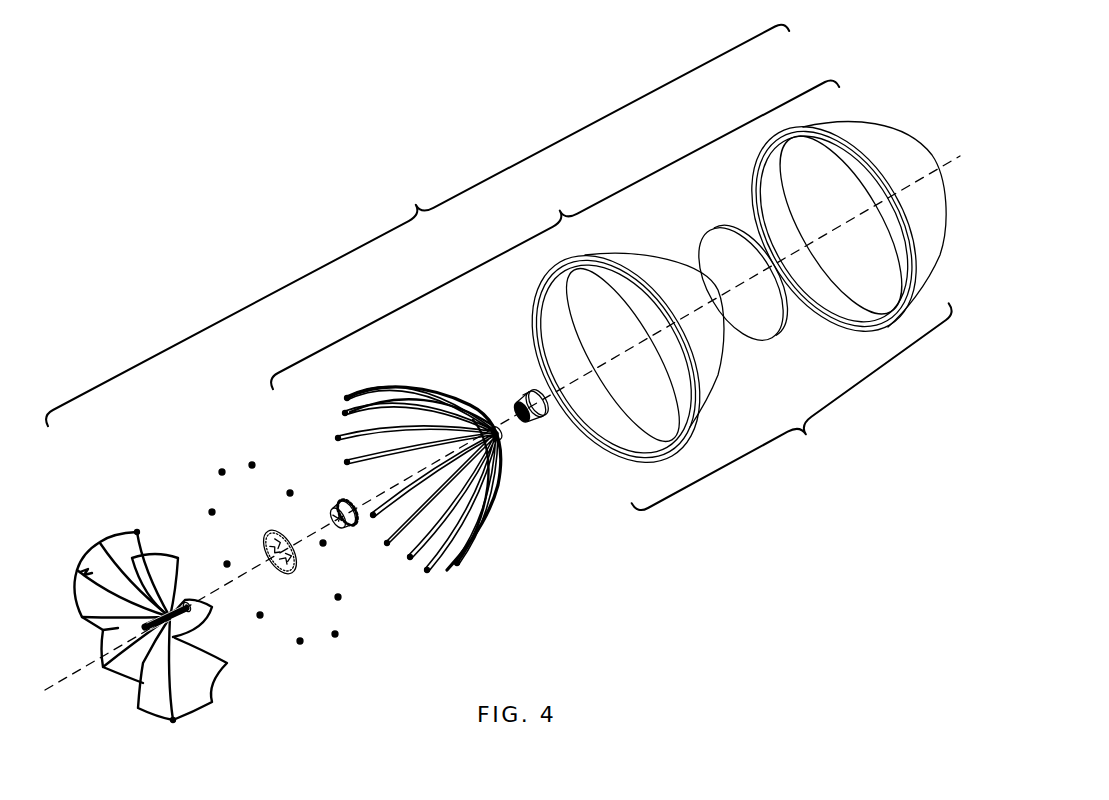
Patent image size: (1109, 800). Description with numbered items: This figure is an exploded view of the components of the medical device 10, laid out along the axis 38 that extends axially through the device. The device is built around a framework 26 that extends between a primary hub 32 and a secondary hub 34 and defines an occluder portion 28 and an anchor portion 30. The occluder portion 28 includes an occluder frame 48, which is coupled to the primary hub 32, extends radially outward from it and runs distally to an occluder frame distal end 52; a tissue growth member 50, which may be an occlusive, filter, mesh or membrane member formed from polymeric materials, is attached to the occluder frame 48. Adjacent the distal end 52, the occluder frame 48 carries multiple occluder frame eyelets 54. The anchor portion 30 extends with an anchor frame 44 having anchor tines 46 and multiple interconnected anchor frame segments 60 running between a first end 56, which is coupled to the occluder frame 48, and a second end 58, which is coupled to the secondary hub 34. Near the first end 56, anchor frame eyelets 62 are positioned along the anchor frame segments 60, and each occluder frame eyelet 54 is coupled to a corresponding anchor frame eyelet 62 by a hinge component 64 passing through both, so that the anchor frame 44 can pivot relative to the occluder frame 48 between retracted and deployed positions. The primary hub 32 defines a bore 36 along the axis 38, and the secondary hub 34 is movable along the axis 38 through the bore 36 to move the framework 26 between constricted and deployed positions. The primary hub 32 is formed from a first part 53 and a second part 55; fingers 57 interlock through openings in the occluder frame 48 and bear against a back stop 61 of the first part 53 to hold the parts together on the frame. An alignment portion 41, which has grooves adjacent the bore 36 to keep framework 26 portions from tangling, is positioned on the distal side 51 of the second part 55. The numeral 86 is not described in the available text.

The medical device 10 is at (417, 225).
The occluder portion 28 is at (555, 235).
The axis 38 is at (945, 164).
The occluder frame 48 is at (415, 388).
The bore 36 is at (523, 404).
The back stop 61 is at (527, 393).
The primary hub 32 is at (538, 432).
The first part 53 is at (545, 412).
The tissue growth member 50 is at (792, 406).
The occluder frame distal end 52 is at (335, 439).
The distal side 51 is at (330, 519).
The second part 55 is at (343, 532).
The fingers 57 is at (360, 520).
The occluder frame eyelets 54 is at (430, 567).
The framework 26 is at (390, 520).
The alignment portion 41 is at (292, 572).
The anchor frame eyelets 62 is at (139, 528).
The anchor tines 46 is at (84, 598).
The second end 58 is at (112, 626).
The secondary hub 34 is at (190, 620).
The anchor frame segments 60 is at (125, 672).
The first end 56 is at (233, 660).
The anchor portion 30 is at (172, 624).
The anchor frame 44 is at (192, 720).
The hinge component 64 is at (338, 635).
The connector 86 is at (767, 799).